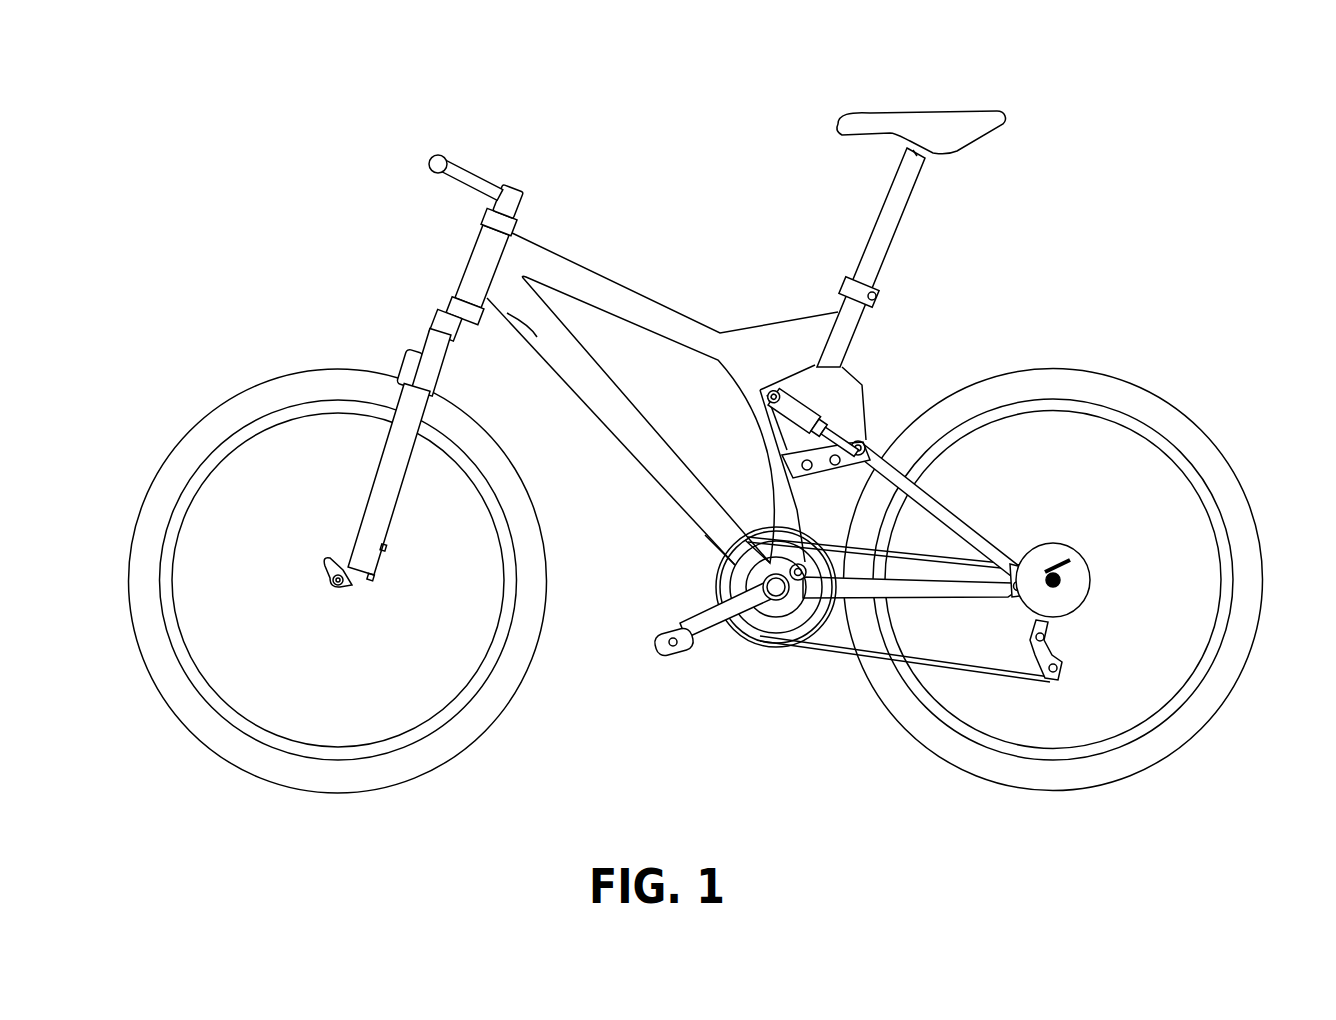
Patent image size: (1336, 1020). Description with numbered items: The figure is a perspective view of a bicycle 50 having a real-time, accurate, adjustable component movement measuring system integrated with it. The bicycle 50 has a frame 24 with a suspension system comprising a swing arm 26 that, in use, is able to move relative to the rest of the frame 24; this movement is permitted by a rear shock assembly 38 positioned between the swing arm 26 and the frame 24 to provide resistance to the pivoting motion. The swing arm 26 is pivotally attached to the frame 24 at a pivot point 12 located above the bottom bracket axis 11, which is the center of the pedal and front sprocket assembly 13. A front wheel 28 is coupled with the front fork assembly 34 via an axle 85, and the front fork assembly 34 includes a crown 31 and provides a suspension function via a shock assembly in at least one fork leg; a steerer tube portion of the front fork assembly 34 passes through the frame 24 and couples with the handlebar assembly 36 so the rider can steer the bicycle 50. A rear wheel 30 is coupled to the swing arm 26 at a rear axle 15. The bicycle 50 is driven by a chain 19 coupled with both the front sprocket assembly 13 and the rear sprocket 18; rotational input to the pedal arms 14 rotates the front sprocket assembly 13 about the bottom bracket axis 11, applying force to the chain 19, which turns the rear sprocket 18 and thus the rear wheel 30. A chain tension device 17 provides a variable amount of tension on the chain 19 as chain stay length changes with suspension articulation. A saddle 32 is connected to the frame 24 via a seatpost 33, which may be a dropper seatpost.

The bicycle 50 is at (729, 66).
The front wheel 28 is at (247, 390).
The swing arm 26 is at (962, 395).
The rear wheel 30 is at (1212, 436).
The frame 24 is at (641, 292).
The pivot point 12 is at (730, 547).
The bottom bracket axis 11 is at (783, 633).
The front sprocket assembly 13 is at (757, 637).
The pedal arms 14 is at (690, 648).
The rear axle 15 is at (1062, 583).
The rear sprocket 18 is at (1072, 598).
The chain tension device 17 is at (1057, 653).
The chain 19 is at (1010, 670).
The crown 31 is at (428, 318).
The front fork assembly 34 is at (356, 523).
The axle 85 is at (334, 593).
The handlebar assembly 36 is at (443, 152).
The saddle 32 is at (937, 108).
The seatpost 33 is at (907, 212).
The rear shock assembly 38 is at (820, 415).